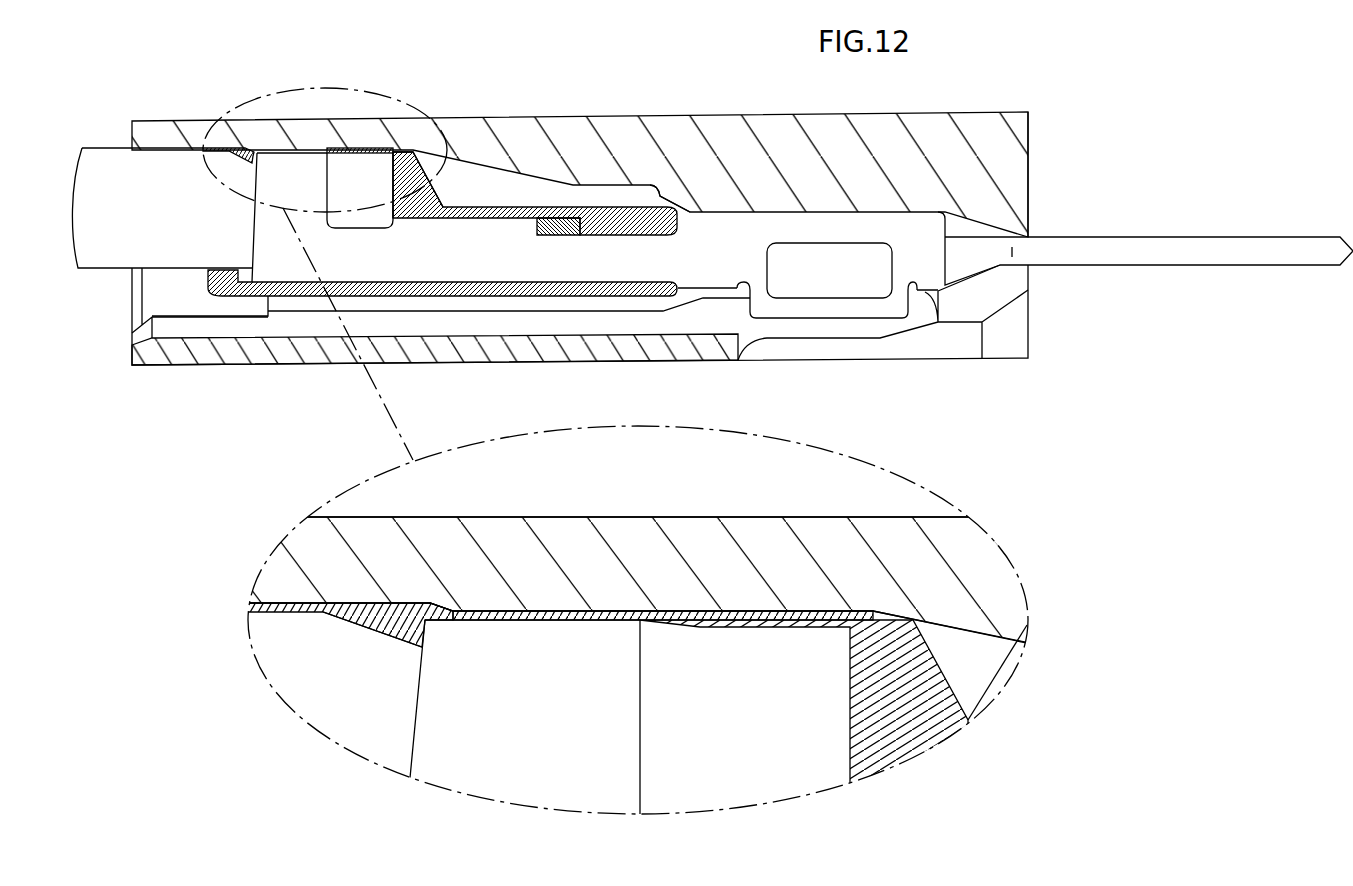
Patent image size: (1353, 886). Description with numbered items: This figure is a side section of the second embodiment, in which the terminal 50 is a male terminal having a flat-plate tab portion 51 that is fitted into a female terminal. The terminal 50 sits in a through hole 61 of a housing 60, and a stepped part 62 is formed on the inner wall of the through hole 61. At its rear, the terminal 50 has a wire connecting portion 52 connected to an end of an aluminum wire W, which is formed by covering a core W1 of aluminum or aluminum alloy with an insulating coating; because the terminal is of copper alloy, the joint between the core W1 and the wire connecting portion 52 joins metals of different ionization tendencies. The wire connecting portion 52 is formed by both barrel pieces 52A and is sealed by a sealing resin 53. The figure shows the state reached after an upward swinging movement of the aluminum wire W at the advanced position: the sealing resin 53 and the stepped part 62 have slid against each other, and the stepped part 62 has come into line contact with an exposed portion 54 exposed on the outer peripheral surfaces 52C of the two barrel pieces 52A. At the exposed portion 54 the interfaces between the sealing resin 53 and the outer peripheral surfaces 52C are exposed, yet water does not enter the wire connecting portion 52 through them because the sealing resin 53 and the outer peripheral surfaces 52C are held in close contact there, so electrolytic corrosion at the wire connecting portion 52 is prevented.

The terminal 50 is at (595, 186).
The tab portion 51 is at (1163, 255).
The wire connecting portion 52 is at (463, 175).
The barrel pieces 52A is at (290, 156).
The outer peripheral surfaces 52C is at (328, 152).
The sealing resin 53 is at (412, 173).
The exposed portion 54 is at (457, 615).
The housing 60 is at (750, 137).
The through hole 61 is at (653, 186).
The stepped part 62 is at (256, 153).
The aluminum wire W is at (103, 158).
The core W1 is at (564, 237).